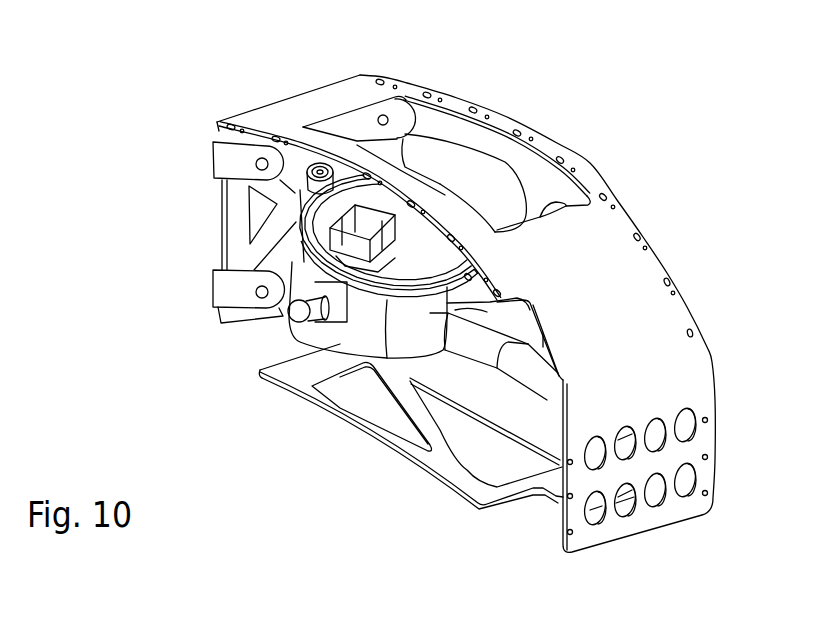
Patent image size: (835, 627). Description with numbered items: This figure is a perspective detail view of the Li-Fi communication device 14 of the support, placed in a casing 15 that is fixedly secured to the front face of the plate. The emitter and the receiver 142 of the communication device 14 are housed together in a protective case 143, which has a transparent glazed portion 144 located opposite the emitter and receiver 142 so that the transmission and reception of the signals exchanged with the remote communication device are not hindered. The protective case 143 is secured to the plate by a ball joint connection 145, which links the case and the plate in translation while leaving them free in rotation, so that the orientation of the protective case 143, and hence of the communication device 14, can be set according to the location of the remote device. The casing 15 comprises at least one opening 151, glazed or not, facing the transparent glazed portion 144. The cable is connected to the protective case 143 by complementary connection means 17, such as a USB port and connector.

The communication device 14 is at (338, 353).
The casing 15 is at (713, 335).
The complementary connection means 17 is at (453, 353).
The receiver 142 is at (368, 214).
The protective case 143 is at (387, 333).
The transparent glazed portion 144 is at (343, 197).
The ball joint connection 145 is at (293, 317).
The opening 151 is at (579, 180).